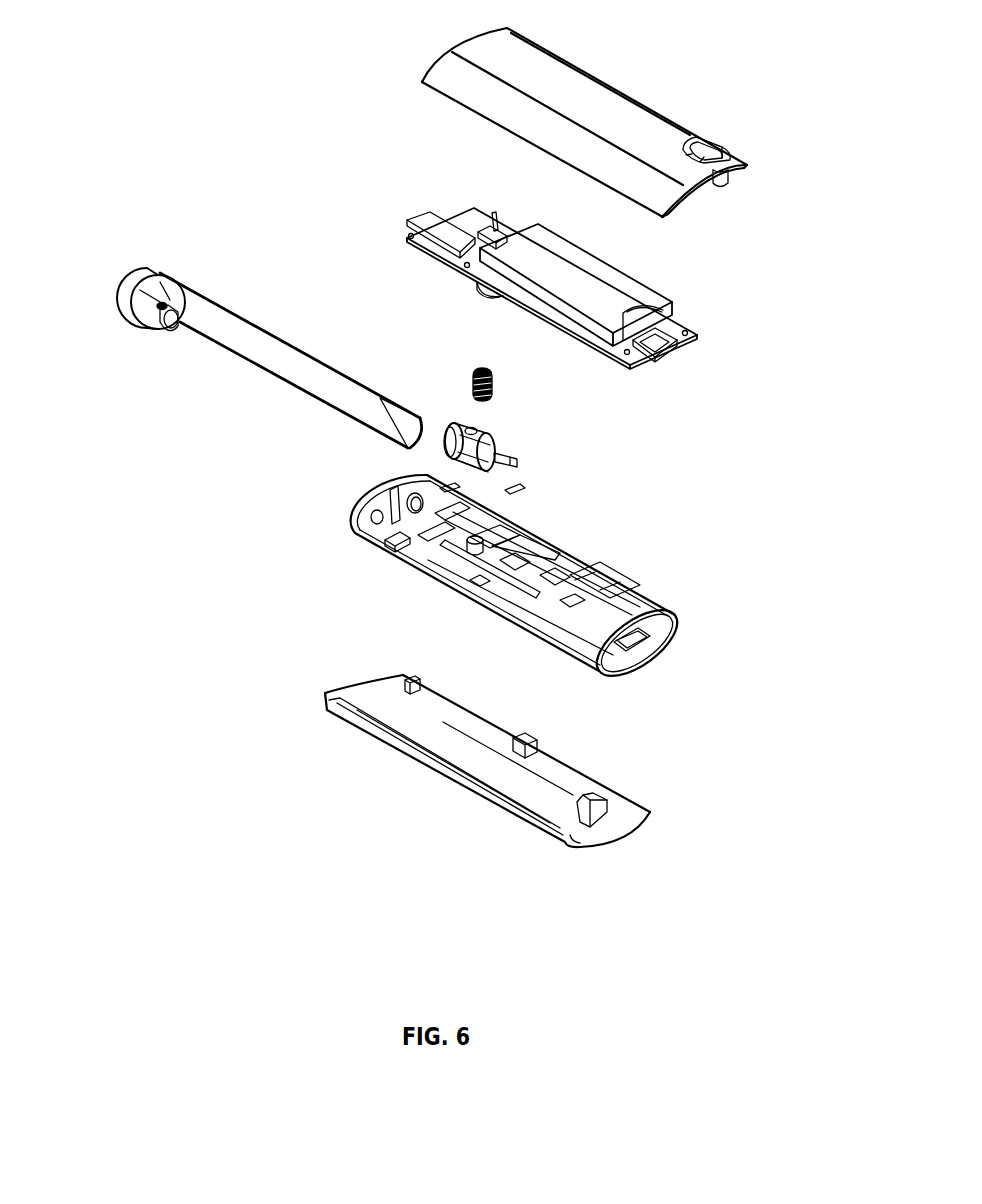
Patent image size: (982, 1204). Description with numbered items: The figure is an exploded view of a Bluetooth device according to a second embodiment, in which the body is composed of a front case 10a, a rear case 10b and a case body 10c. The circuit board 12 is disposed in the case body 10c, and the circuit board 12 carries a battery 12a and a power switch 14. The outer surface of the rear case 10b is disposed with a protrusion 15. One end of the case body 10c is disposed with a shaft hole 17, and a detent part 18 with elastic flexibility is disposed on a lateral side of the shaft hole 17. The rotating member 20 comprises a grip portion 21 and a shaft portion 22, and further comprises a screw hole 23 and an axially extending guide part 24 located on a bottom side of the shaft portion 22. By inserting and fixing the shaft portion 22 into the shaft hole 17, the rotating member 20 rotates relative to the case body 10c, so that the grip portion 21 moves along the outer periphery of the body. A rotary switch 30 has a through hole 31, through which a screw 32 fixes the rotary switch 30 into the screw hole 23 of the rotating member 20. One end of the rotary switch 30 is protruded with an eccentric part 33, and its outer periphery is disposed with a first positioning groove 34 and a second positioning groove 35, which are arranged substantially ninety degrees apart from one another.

The front case 10a is at (610, 825).
The rear case 10b is at (683, 183).
The case body 10c is at (662, 640).
The circuit board 12 is at (637, 360).
The battery 12a is at (647, 293).
The power switch 14 is at (493, 223).
The protrusion 15 is at (710, 137).
The shaft hole 17 is at (397, 490).
The detent part 18 is at (392, 547).
The rotating member 20 is at (148, 275).
The grip portion 21 is at (252, 340).
The shaft portion 22 is at (162, 332).
The screw hole 23 is at (167, 303).
The guide part 24 is at (137, 327).
The rotary switch 30 is at (488, 437).
The through hole 31 is at (468, 423).
The screw 32 is at (493, 383).
The eccentric part 33 is at (515, 463).
The first positioning groove 34 is at (485, 473).
The second positioning groove 35 is at (448, 443).